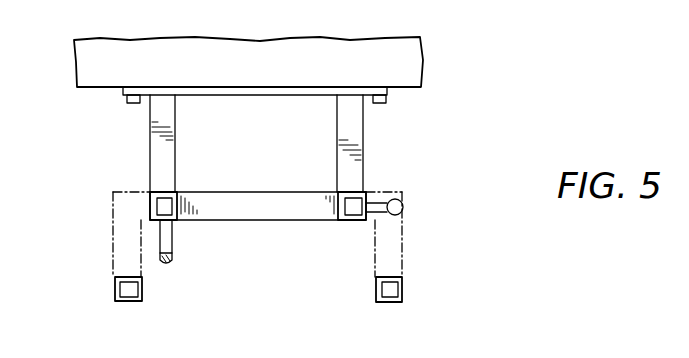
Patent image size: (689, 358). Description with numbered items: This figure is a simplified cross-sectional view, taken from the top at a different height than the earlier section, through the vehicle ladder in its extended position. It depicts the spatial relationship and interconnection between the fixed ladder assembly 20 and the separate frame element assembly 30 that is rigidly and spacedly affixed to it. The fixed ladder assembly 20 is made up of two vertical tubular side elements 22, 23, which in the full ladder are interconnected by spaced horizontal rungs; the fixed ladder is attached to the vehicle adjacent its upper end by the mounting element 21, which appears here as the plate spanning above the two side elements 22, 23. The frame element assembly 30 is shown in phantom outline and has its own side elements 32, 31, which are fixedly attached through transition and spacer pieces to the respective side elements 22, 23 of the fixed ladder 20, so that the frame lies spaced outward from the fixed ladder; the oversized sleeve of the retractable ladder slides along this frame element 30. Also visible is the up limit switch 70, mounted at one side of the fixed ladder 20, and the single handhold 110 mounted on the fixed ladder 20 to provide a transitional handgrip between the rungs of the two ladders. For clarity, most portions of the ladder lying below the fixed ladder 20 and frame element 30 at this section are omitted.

The fixed ladder assembly 20 is at (270, 192).
The mounting element 21 is at (259, 97).
The vertical tubular side element 22 is at (176, 224).
The vertical tubular side element 23 is at (341, 223).
The frame element assembly 30 is at (108, 250).
The side element of frame element assembly 31 is at (402, 290).
The side element of frame element assembly 32 is at (129, 303).
The up limit switch 70 is at (404, 207).
The single handhold 110 is at (167, 266).